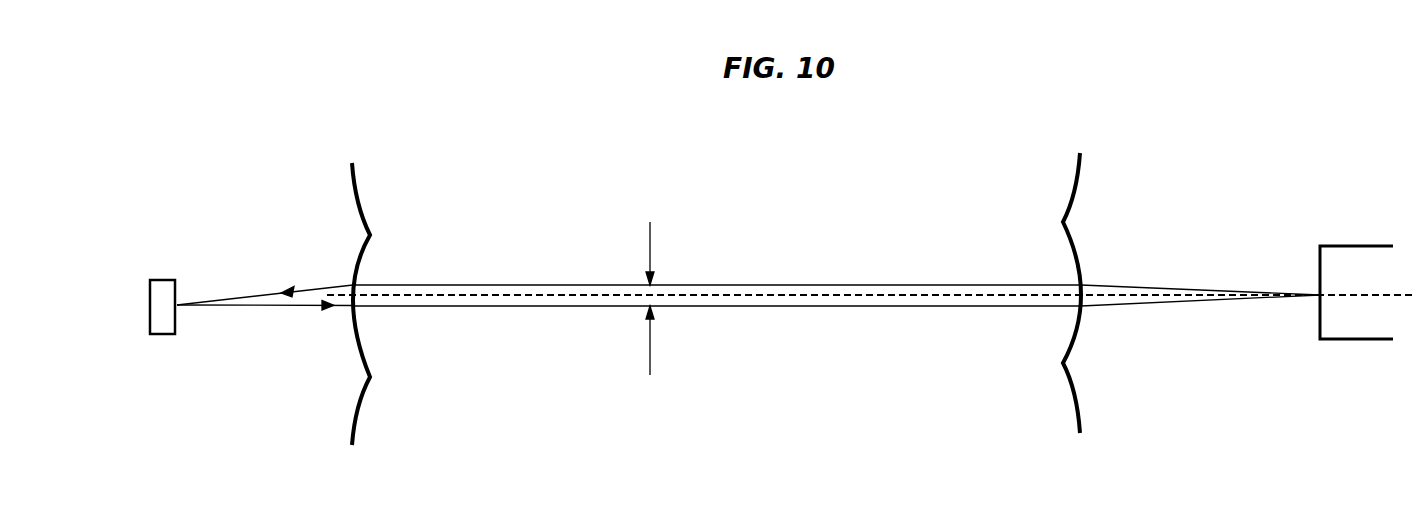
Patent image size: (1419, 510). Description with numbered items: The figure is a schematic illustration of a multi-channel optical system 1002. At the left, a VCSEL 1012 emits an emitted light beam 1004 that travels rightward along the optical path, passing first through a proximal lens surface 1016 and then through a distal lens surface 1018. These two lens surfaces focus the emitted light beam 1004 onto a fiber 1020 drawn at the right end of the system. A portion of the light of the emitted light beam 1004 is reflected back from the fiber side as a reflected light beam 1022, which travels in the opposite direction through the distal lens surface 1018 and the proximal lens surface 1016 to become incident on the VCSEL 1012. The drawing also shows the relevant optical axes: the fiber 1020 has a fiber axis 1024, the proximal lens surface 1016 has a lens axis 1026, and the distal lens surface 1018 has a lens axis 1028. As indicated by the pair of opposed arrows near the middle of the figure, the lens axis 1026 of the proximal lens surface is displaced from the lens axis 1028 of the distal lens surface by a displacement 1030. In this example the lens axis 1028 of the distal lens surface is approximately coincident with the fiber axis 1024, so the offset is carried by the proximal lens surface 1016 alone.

The multi-channel optical system 1002 is at (803, 147).
The emitted light beam 1004 is at (258, 307).
The VCSEL 1012 is at (160, 290).
The proximal lens surface 1016 is at (363, 265).
The distal lens surface 1018 is at (1065, 242).
The fiber 1020 is at (1320, 263).
The reflected light beam 1022 is at (250, 297).
The fiber axis 1024 is at (797, 293).
The lens axis 1026 is at (563, 306).
The lens axis 1028 is at (828, 295).
The displacement 1030 is at (642, 320).